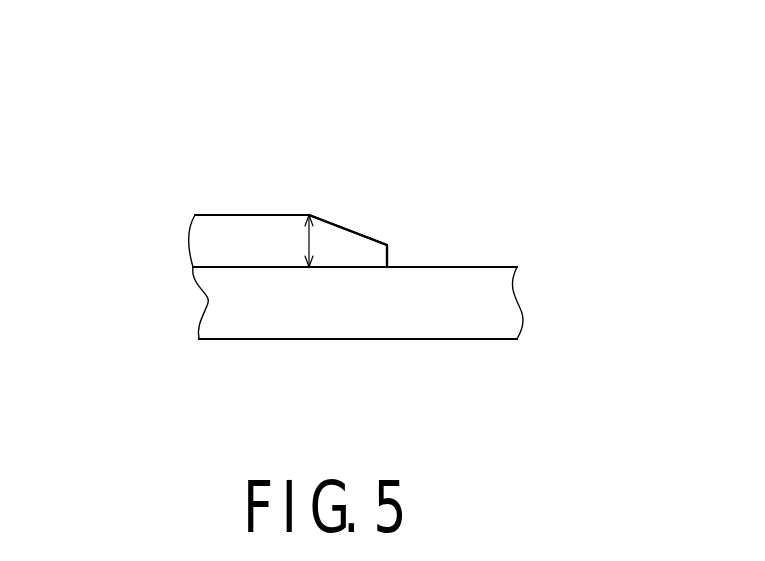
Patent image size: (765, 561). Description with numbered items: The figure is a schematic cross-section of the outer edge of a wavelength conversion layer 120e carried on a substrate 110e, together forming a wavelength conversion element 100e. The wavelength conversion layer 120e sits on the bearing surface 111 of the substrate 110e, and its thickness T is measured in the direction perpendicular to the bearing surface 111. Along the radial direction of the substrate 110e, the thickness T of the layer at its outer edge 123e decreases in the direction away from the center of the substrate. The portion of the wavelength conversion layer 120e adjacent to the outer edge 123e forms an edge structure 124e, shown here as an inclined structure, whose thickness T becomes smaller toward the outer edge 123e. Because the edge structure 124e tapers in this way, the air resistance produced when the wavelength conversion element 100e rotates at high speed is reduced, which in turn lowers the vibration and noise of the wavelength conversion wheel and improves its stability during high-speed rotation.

The wavelength conversion element 100e is at (137, 67).
The substrate 110e is at (277, 313).
The bearing surface 111 is at (485, 267).
The wavelength conversion layer 120e is at (230, 233).
The outer edge 123e is at (390, 258).
The edge structure 124e is at (343, 227).
The thickness T is at (305, 242).